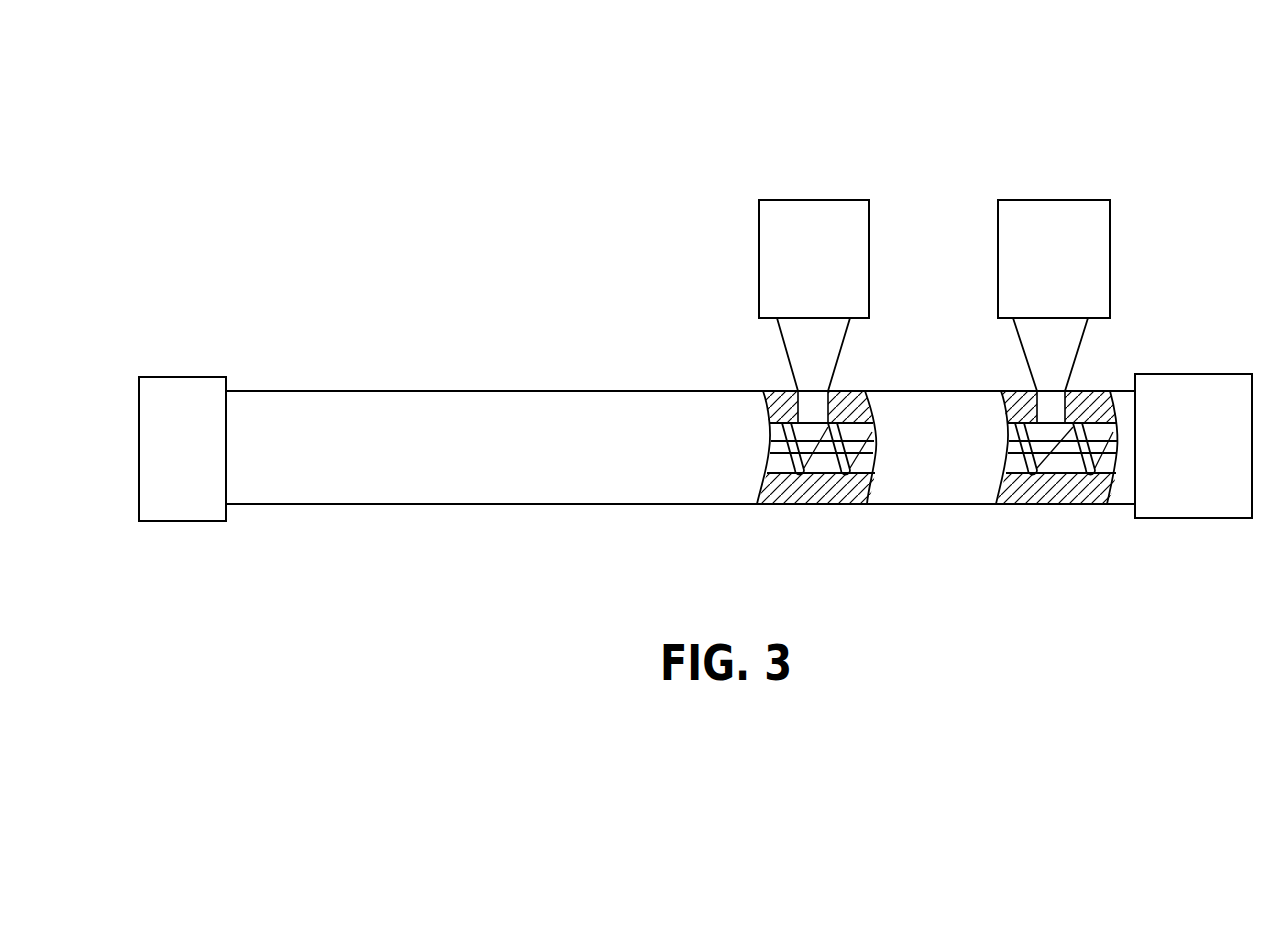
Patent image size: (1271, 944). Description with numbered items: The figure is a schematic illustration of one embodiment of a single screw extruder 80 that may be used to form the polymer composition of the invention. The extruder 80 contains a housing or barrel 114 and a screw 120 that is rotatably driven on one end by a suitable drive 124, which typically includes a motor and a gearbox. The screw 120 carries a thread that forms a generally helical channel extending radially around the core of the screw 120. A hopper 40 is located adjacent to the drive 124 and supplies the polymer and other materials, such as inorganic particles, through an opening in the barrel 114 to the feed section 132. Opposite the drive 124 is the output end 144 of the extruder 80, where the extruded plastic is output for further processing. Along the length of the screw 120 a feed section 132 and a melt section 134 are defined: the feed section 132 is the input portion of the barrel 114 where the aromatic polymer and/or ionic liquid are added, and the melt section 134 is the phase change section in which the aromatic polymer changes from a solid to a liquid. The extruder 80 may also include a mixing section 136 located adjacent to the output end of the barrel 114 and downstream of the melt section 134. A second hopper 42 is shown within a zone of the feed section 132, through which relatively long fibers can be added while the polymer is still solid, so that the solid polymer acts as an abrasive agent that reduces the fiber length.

The single screw extruder 80 is at (746, 90).
The barrel 114 is at (525, 443).
The mixing section 136 is at (230, 387).
The melt section 134 is at (705, 510).
The feed section 132 is at (1107, 510).
The hopper 42 is at (800, 267).
The hopper 40 is at (1040, 267).
The screw 120 is at (1013, 447).
The output end 144 is at (163, 460).
The drive 124 is at (1174, 462).